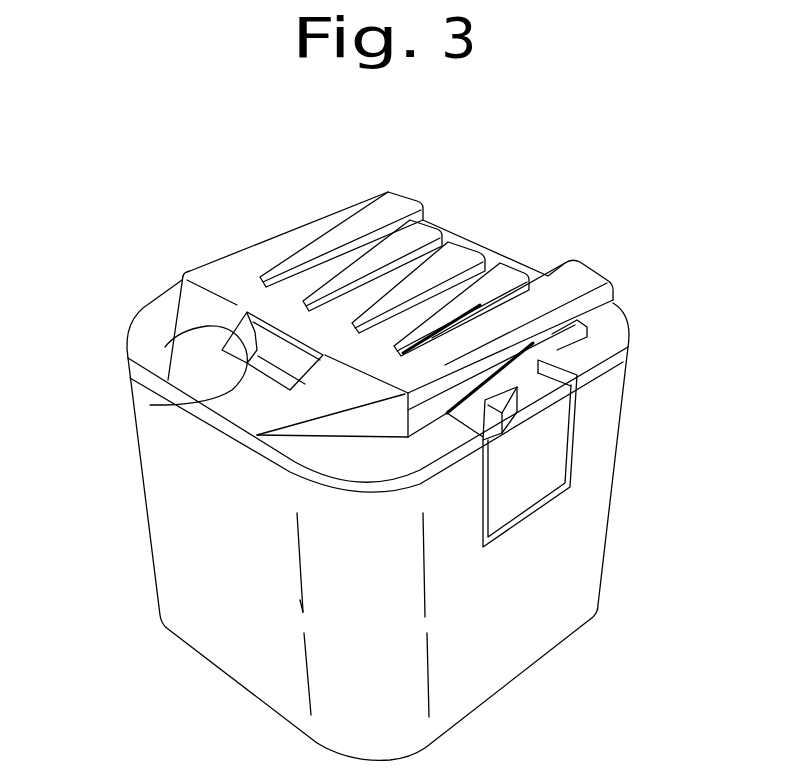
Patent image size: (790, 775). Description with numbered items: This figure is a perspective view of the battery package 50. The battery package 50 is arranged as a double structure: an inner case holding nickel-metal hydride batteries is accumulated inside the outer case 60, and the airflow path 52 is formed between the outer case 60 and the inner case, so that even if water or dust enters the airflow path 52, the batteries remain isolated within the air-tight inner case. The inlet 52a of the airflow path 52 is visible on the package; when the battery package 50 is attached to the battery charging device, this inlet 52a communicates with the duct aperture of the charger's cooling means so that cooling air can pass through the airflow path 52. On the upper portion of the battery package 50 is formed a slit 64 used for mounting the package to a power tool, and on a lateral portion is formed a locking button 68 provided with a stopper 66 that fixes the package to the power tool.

The battery package 50 is at (497, 179).
The airflow path 52 is at (165, 347).
The inlet 52a is at (175, 405).
The outer case 60 is at (493, 677).
The slit 64 is at (305, 262).
The stopper 66 is at (520, 413).
The locking button 68 is at (553, 450).